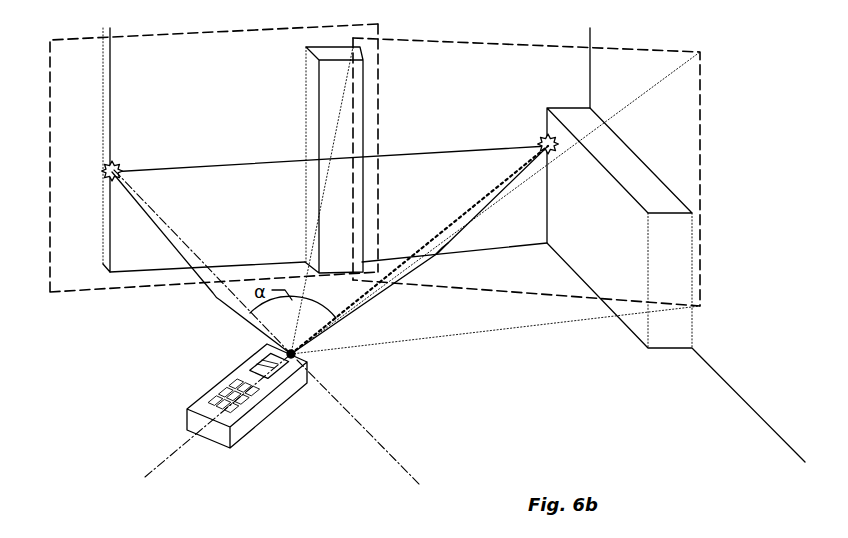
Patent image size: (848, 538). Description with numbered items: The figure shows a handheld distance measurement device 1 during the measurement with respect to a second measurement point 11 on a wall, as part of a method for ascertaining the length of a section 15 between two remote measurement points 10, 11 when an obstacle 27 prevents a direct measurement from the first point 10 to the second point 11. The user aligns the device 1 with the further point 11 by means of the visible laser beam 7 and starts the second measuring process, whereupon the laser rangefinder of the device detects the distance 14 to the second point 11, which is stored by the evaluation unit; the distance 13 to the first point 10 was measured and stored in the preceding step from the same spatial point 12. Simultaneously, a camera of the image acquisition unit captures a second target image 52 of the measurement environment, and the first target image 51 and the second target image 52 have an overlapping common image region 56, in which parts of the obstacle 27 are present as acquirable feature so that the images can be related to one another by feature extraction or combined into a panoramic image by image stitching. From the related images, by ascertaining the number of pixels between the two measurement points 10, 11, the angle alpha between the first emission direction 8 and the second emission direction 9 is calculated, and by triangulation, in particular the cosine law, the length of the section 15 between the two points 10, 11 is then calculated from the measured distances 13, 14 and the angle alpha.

The handheld distance measurement device 1 is at (233, 360).
The visible laser beam 7 is at (440, 232).
The first emission direction 8 is at (400, 463).
The second emission direction 9 is at (160, 461).
The first measurement point 10 is at (117, 166).
The second measurement point 11 is at (544, 141).
The spatial point 12 is at (298, 361).
The distance to the first point 13 is at (201, 262).
The distance to the second point 14 is at (448, 259).
The section 15 is at (212, 163).
The obstacle 27 is at (322, 99).
The first target image 51 is at (127, 296).
The second target image 52 is at (510, 300).
The common image region 56 is at (370, 58).